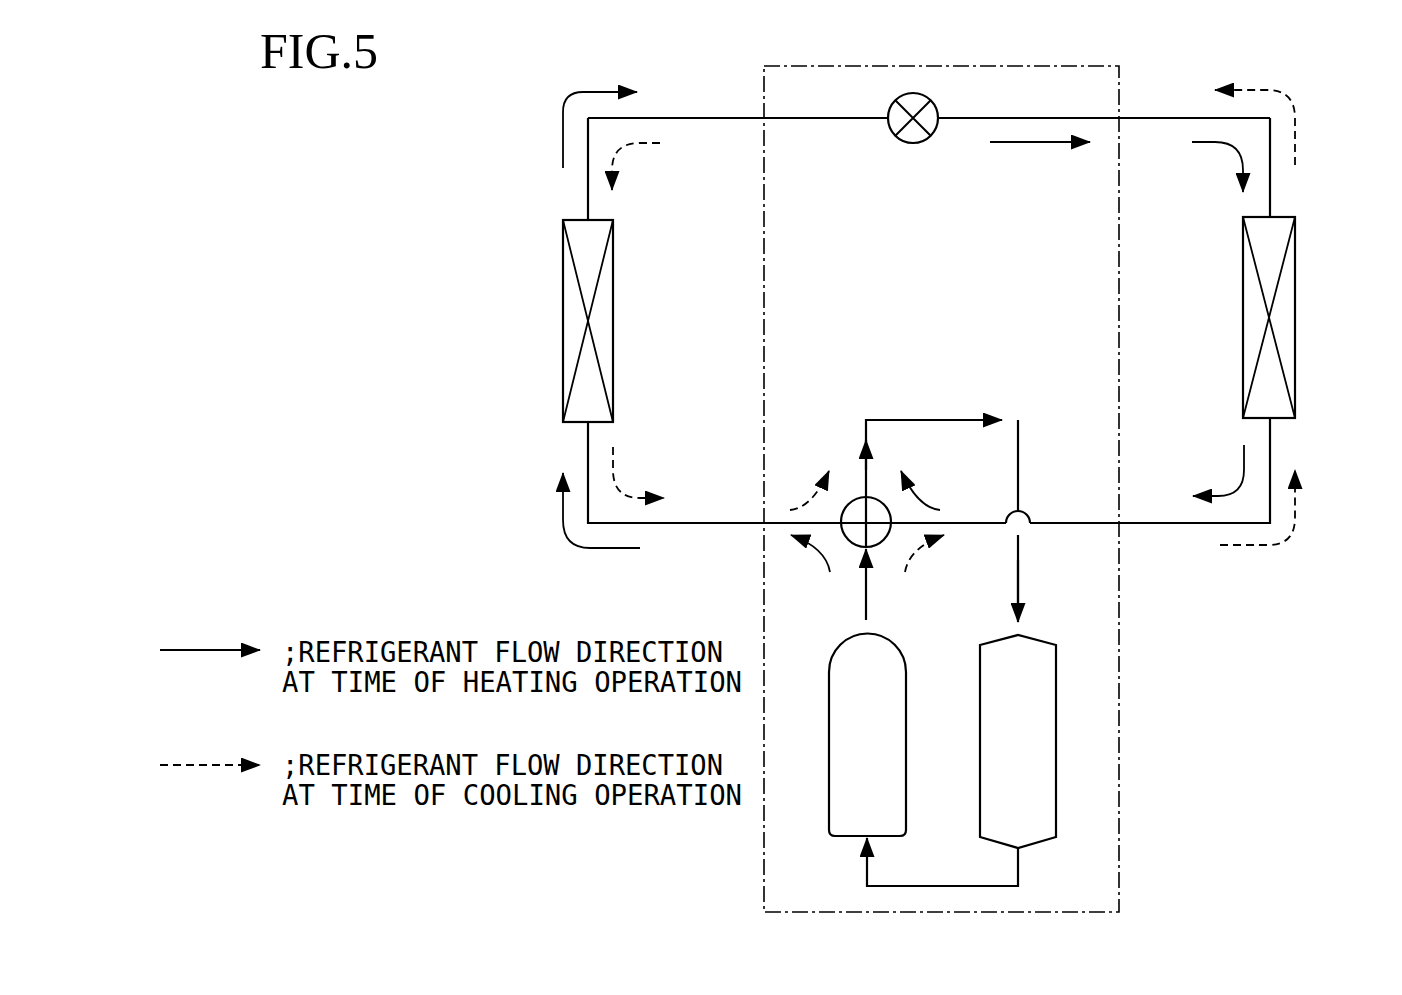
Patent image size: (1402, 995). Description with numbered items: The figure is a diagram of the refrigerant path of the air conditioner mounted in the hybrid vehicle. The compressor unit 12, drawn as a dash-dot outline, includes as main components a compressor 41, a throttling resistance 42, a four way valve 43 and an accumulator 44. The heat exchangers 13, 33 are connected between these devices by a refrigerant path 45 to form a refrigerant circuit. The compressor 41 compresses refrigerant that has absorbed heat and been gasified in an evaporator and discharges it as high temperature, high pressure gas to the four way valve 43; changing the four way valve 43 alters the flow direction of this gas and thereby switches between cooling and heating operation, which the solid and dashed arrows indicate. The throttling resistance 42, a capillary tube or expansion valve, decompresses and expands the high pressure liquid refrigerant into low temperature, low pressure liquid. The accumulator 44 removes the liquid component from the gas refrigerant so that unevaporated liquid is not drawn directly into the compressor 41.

The compressor unit 12 is at (1120, 777).
The heat exchanger 13 is at (562, 263).
The heat exchanger 33 is at (1296, 252).
The compressor 41 is at (829, 692).
The throttling resistance 42 is at (922, 140).
The four way valve 43 is at (857, 496).
The accumulator 44 is at (1057, 728).
The refrigerant path 45 is at (700, 117).